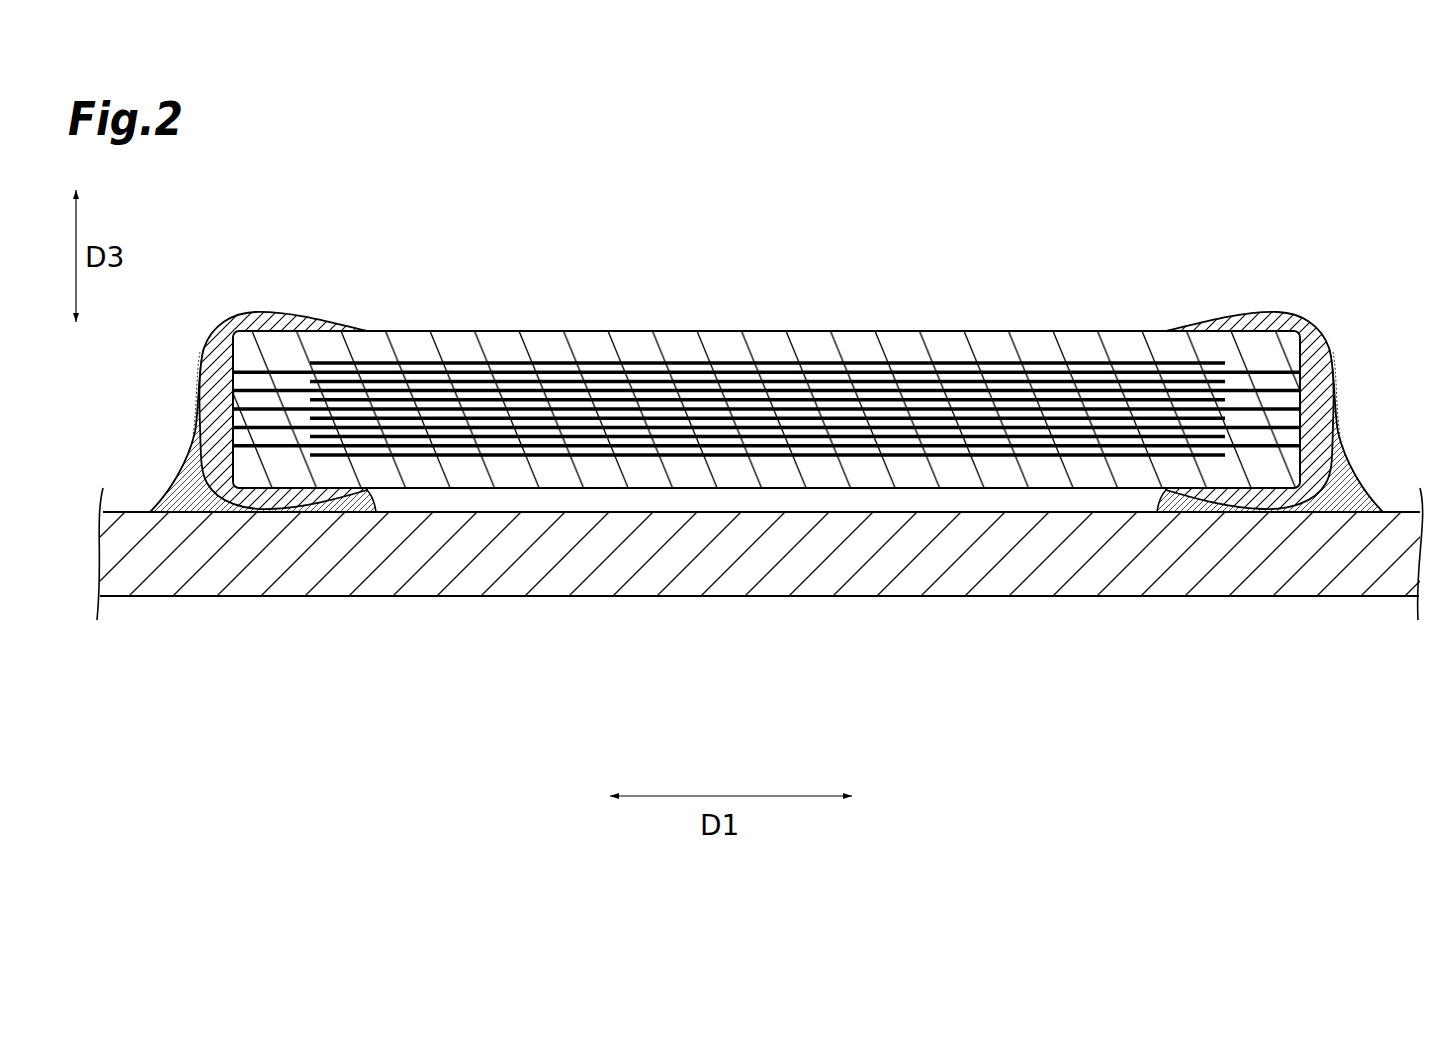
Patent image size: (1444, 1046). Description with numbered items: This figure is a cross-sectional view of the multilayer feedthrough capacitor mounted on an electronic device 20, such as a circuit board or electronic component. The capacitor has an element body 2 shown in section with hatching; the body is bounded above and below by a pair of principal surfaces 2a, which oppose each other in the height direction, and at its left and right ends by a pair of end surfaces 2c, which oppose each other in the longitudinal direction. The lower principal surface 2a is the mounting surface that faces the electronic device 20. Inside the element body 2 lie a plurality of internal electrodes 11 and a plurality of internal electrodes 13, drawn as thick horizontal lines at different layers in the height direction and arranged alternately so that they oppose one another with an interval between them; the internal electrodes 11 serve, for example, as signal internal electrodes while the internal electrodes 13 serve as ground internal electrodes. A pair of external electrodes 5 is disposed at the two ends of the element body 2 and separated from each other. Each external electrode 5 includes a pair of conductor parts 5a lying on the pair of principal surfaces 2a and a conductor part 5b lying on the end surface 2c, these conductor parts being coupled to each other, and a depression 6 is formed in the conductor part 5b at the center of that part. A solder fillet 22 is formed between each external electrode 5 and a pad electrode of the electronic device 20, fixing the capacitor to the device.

The element body 2 is at (1027, 328).
The principal surface 2a is at (898, 489).
The end surface 2c is at (1303, 353).
The external electrode 5 is at (770, 407).
The conductor part 5a is at (1286, 503).
The conductor part 5b is at (1340, 452).
The depression 6 is at (1336, 412).
The internal electrode 11 is at (282, 428).
The internal electrode 13 is at (1200, 446).
The electronic device 20 is at (533, 558).
The solder fillet 22 is at (1353, 513).